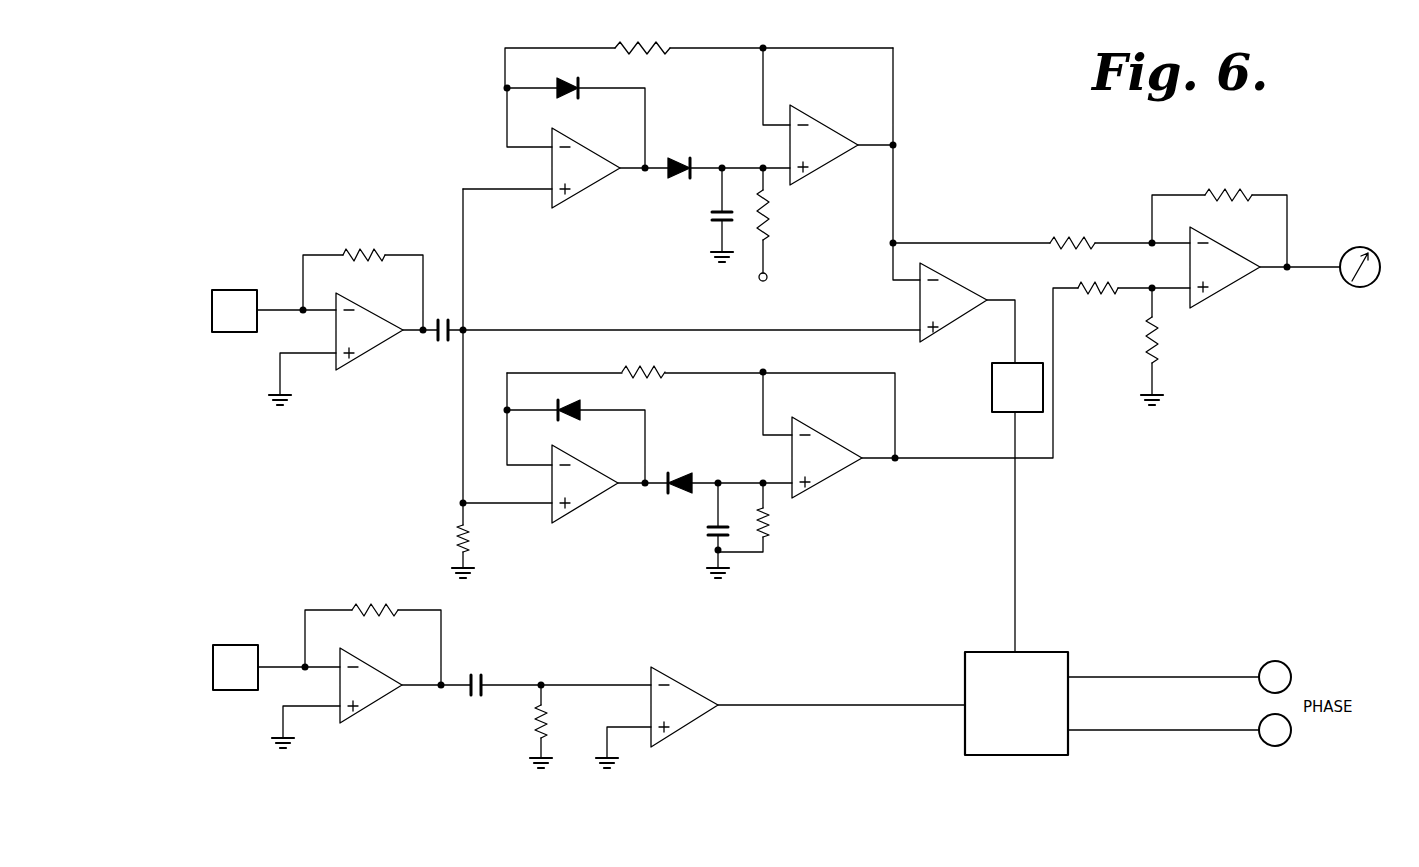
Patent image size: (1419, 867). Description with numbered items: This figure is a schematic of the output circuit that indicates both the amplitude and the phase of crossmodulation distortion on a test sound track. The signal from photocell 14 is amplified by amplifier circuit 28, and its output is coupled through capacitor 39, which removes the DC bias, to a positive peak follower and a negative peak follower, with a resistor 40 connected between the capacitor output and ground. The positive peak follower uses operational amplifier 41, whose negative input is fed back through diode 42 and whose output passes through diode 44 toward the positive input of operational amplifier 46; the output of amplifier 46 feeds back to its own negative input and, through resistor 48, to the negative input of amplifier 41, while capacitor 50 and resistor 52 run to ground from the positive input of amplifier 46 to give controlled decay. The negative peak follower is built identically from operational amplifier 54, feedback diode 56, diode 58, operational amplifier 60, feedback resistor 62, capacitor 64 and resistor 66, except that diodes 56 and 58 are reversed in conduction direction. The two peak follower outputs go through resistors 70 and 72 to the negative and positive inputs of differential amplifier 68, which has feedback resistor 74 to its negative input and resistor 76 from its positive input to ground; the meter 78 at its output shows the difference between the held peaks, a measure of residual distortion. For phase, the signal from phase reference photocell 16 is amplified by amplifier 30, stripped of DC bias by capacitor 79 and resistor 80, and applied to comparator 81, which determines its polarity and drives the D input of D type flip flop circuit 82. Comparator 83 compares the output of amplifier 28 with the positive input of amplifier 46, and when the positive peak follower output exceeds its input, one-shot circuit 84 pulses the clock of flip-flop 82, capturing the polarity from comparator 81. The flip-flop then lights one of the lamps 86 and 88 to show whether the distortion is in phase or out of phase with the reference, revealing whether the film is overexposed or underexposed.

The photocell 14 is at (232, 290).
The phase reference photocell 16 is at (228, 650).
The amplifier circuit 28 is at (358, 355).
The amplifier 30 is at (372, 702).
The capacitor 39 is at (443, 345).
The resistor 40 is at (458, 539).
The operational amplifier 41 is at (555, 165).
The diode 42 is at (563, 78).
The diode 44 is at (680, 158).
The operational amplifier 46 is at (830, 132).
The resistor 48 is at (655, 55).
The capacitor 50 is at (710, 215).
The resistor 52 is at (770, 222).
The operational amplifier 54 is at (598, 492).
The feedback diode 56 is at (565, 400).
The diode 58 is at (682, 475).
The operational amplifier 60 is at (835, 470).
The feedback resistor 62 is at (648, 368).
The capacitor 64 is at (706, 532).
The resistor 66 is at (770, 523).
The differential amplifier 68 is at (1228, 278).
The resistor 70 is at (1072, 238).
The resistor 72 is at (1092, 295).
The resistor 74 is at (1232, 190).
The resistor 76 is at (1158, 350).
The meter 78 is at (1345, 258).
The capacitor 79 is at (476, 670).
The resistor 80 is at (538, 725).
The comparator 81 is at (700, 713).
The D type flip flop circuit 82 is at (963, 736).
The comparator 83 is at (950, 290).
The one-shot circuit 84 is at (990, 398).
The lamp 86 is at (1268, 667).
The lamp 88 is at (1264, 740).